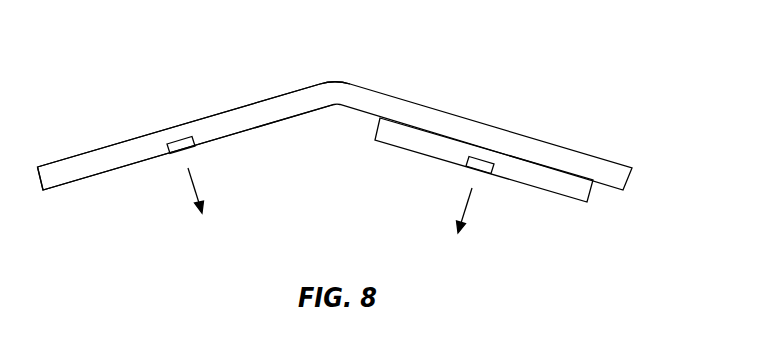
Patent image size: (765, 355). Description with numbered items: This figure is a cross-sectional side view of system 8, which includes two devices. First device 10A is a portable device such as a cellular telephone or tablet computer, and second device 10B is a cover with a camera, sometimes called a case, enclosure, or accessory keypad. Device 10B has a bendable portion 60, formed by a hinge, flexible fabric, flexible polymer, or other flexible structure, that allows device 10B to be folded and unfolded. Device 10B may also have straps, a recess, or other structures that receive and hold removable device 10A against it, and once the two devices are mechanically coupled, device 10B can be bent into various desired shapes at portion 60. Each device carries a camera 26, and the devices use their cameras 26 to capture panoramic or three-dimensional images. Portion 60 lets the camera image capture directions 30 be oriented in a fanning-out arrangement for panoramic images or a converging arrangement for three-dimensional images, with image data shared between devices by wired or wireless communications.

The system 8 is at (673, 69).
The bendable portion 60 is at (337, 71).
The second device 10B is at (80, 168).
The first device 10A is at (553, 195).
The cameras 26 is at (175, 150).
The camera image capture directions 30 is at (193, 182).